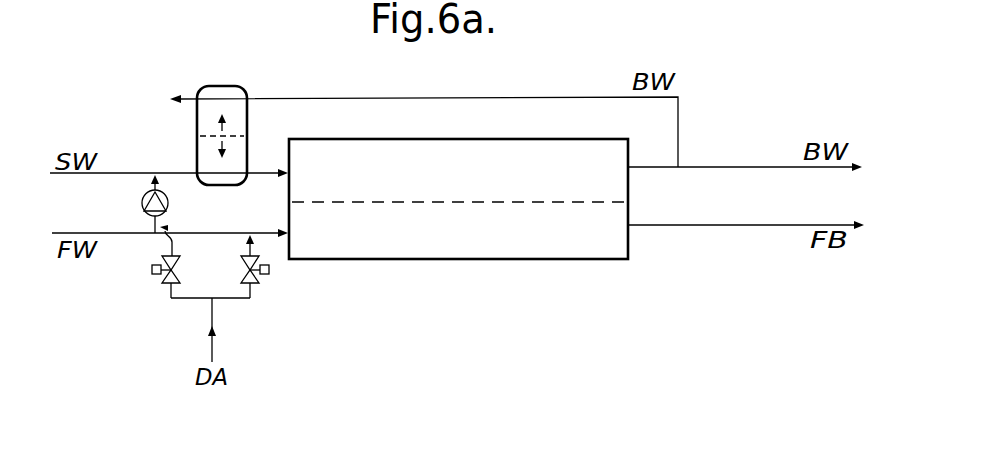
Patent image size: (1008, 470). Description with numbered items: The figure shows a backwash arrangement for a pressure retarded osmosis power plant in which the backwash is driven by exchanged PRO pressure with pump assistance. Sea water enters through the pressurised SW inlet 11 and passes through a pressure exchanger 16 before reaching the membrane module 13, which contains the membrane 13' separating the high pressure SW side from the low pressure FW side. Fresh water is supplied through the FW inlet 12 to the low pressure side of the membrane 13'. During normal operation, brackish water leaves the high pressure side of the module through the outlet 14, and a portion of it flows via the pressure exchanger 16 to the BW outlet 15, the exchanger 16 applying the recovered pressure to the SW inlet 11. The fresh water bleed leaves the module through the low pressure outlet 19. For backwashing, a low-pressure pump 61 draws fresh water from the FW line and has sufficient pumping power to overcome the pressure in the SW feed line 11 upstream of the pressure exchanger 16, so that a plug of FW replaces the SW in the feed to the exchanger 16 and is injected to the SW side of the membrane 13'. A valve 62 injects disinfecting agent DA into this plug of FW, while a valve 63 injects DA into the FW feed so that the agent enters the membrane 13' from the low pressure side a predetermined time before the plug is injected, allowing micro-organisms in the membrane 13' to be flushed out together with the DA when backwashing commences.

The SW inlet 11 is at (110, 173).
The FW inlet 12 is at (110, 234).
The membrane module 13 is at (458, 182).
The membrane 13' is at (458, 258).
The outlet 14 is at (657, 167).
The BW outlet 15 is at (193, 97).
The pressure exchanger 16 is at (247, 115).
The low pressure outlet 19 is at (660, 226).
The pump 61 is at (142, 203).
The valve 62 is at (160, 282).
The valve 63 is at (262, 282).